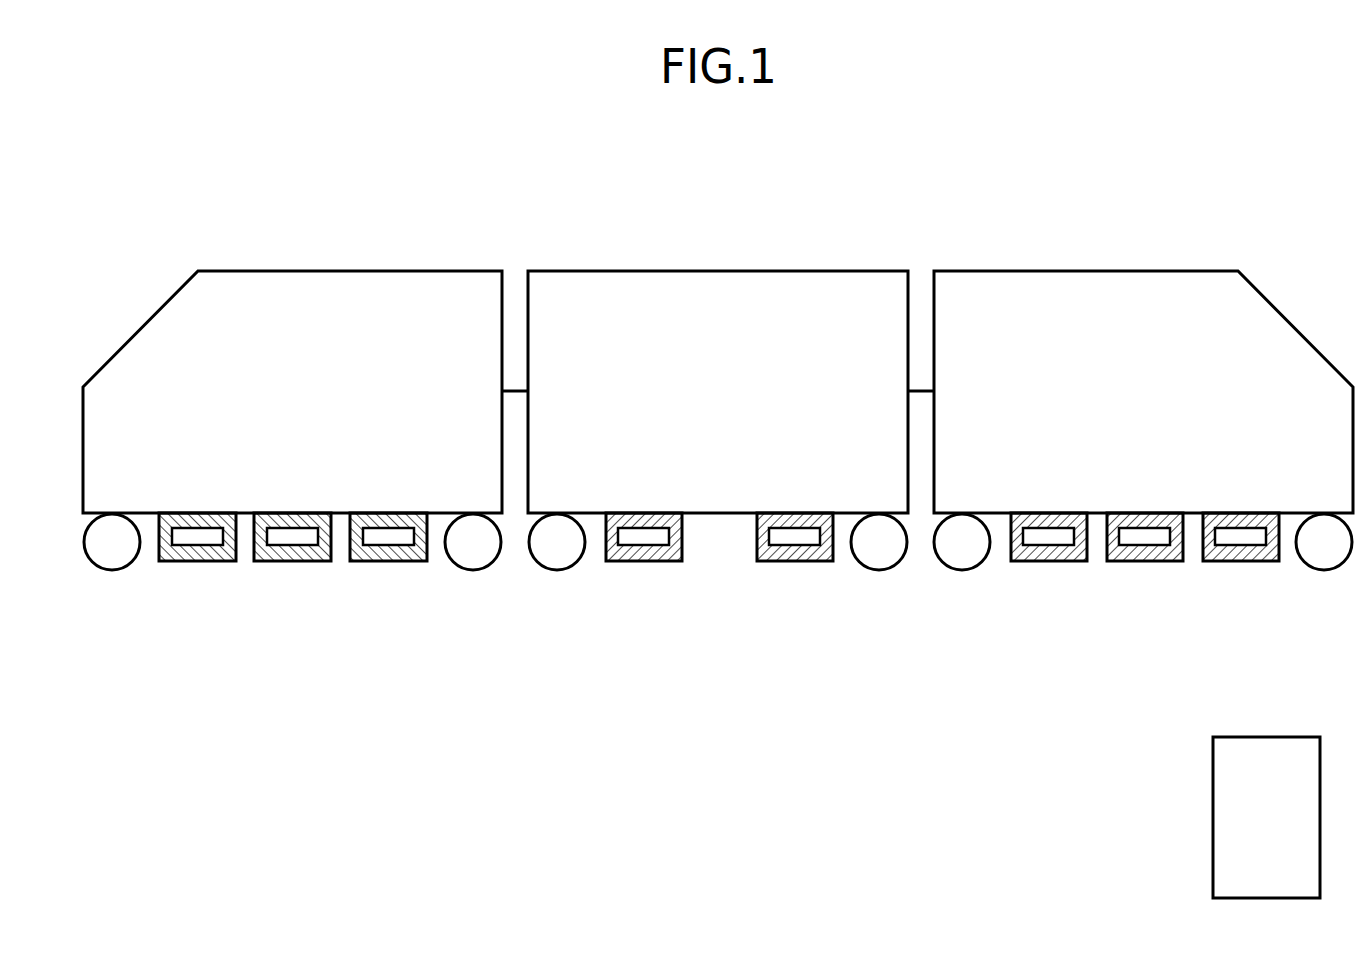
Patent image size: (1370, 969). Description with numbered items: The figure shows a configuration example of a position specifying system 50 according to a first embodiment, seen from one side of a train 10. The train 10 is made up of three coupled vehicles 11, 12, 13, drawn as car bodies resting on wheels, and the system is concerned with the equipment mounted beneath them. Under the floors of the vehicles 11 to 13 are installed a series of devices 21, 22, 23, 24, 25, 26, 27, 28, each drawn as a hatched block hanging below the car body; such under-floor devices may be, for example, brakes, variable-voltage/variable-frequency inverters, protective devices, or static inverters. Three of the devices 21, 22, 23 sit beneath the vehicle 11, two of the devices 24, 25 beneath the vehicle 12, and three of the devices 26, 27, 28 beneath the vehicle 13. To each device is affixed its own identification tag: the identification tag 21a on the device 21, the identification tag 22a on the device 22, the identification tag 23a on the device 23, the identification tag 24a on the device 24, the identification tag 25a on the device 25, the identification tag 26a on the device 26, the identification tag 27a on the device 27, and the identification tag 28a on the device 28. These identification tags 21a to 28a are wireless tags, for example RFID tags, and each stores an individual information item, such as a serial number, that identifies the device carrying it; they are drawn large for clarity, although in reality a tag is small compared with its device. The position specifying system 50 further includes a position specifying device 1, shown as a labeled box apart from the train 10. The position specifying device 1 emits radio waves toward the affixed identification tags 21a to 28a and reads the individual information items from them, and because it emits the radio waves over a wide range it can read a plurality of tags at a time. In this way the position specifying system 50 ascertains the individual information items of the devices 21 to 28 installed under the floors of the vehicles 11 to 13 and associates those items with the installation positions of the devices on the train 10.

The position specifying system 50 is at (1243, 157).
The train 10 is at (1355, 232).
The vehicle 11 is at (1160, 271).
The vehicle 12 is at (832, 271).
The vehicle 13 is at (426, 271).
The device 21 is at (1224, 563).
The identification tag 21a is at (1257, 563).
The device 22 is at (1128, 563).
The identification tag 22a is at (1161, 563).
The device 23 is at (1032, 563).
The identification tag 23a is at (1065, 563).
The device 24 is at (778, 563).
The identification tag 24a is at (811, 563).
The device 25 is at (627, 563).
The identification tag 25a is at (660, 563).
The device 26 is at (371, 563).
The identification tag 26a is at (404, 563).
The device 27 is at (275, 563).
The identification tag 27a is at (308, 563).
The device 28 is at (180, 563).
The identification tag 28a is at (213, 563).
The position specifying device 1 is at (1213, 753).